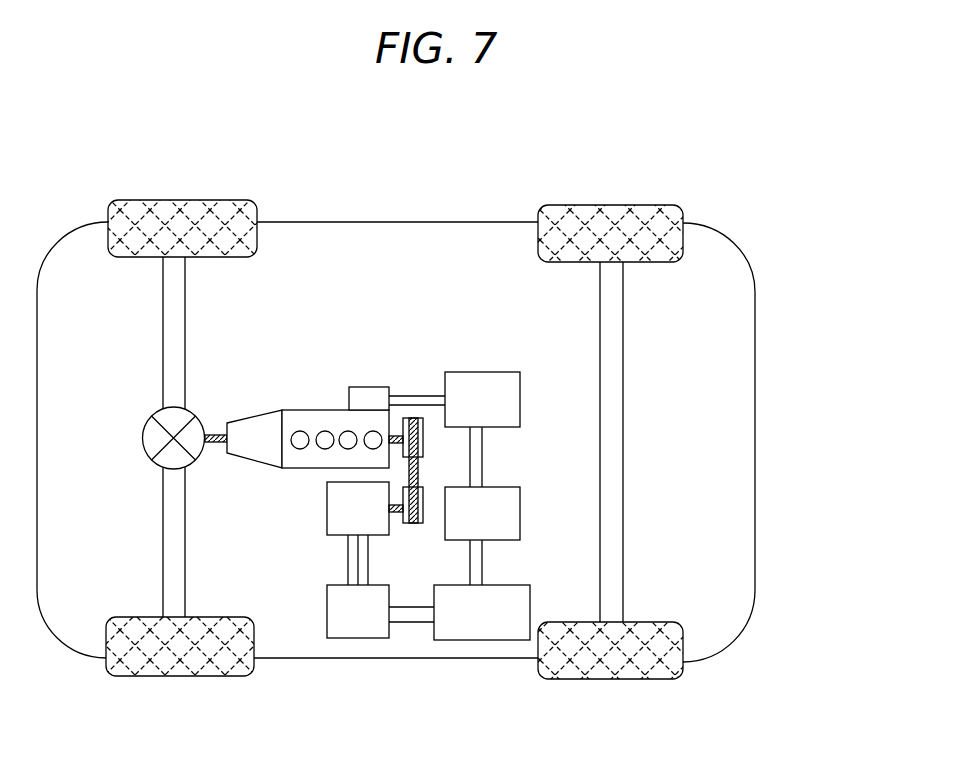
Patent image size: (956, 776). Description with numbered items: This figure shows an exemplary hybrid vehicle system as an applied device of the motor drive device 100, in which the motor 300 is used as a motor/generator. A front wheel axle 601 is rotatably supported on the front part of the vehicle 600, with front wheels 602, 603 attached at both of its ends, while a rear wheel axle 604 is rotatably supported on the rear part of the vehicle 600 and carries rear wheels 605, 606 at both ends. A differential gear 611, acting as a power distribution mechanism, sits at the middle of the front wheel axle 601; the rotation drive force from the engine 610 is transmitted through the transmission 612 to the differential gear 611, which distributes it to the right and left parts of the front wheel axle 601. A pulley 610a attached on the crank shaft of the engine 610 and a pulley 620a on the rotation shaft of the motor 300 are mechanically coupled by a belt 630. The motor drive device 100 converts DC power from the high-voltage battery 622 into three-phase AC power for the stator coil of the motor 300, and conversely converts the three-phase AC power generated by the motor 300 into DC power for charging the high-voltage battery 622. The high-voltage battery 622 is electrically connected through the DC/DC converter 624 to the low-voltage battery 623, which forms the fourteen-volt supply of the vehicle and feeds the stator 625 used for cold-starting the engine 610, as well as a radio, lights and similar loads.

The vehicle 600 is at (755, 355).
The front wheel axle 601 is at (163, 335).
The front wheel 602 is at (178, 200).
The front wheel 603 is at (183, 676).
The rear wheel axle 604 is at (623, 443).
The rear wheel 605 is at (605, 205).
The rear wheel 606 is at (612, 679).
The differential gear 611 is at (142, 438).
The transmission 612 is at (248, 410).
The engine 610 is at (313, 410).
The stator 625 is at (366, 387).
The pulley 610a is at (412, 416).
The low-voltage battery 623 is at (481, 372).
The belt 630 is at (418, 477).
The DC/DC converter 624 is at (522, 512).
The motor 300 is at (327, 505).
The pulley 620a is at (422, 527).
The motor drive device 100 is at (327, 600).
The high-voltage battery 622 is at (483, 640).